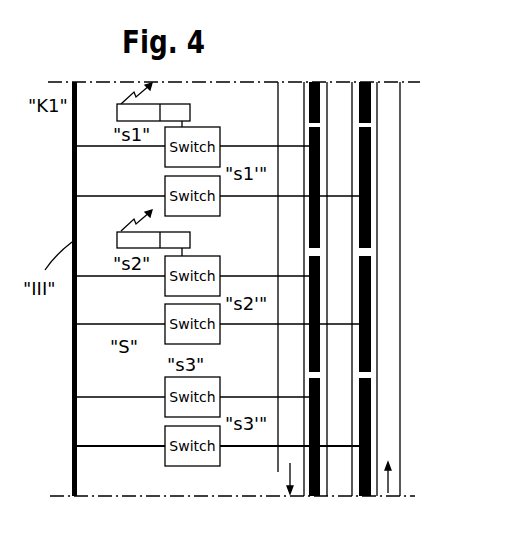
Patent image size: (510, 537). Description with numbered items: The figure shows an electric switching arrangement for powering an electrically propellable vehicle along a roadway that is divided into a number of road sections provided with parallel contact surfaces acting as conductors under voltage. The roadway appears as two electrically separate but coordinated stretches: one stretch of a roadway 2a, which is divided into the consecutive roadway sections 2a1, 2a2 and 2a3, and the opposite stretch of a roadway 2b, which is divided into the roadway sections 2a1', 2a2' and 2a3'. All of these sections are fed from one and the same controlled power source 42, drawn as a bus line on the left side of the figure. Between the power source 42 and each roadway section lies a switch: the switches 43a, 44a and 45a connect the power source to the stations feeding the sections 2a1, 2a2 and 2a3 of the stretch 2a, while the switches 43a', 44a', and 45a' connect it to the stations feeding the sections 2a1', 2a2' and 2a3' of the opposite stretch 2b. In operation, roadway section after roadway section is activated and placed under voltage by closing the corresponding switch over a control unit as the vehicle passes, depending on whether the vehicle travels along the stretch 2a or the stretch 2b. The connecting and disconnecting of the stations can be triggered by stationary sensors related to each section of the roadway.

The stretch of a roadway 2a is at (317, 82).
The opposite stretch of a roadway 2b is at (373, 103).
The roadway section 2a1 is at (272, 173).
The roadway section 2a2 is at (272, 300).
The roadway section 2a3 is at (272, 425).
The roadway section 2a1' is at (413, 187).
The roadway section 2a2' is at (413, 314).
The roadway section 2a3' is at (410, 437).
The controlled power source 42 is at (70, 213).
The switch 43a is at (193, 161).
The switch 43a' is at (219, 185).
The switch 44a is at (193, 289).
The switch 44a' is at (219, 314).
The switch 45a is at (193, 382).
The switch 45a' is at (219, 431).